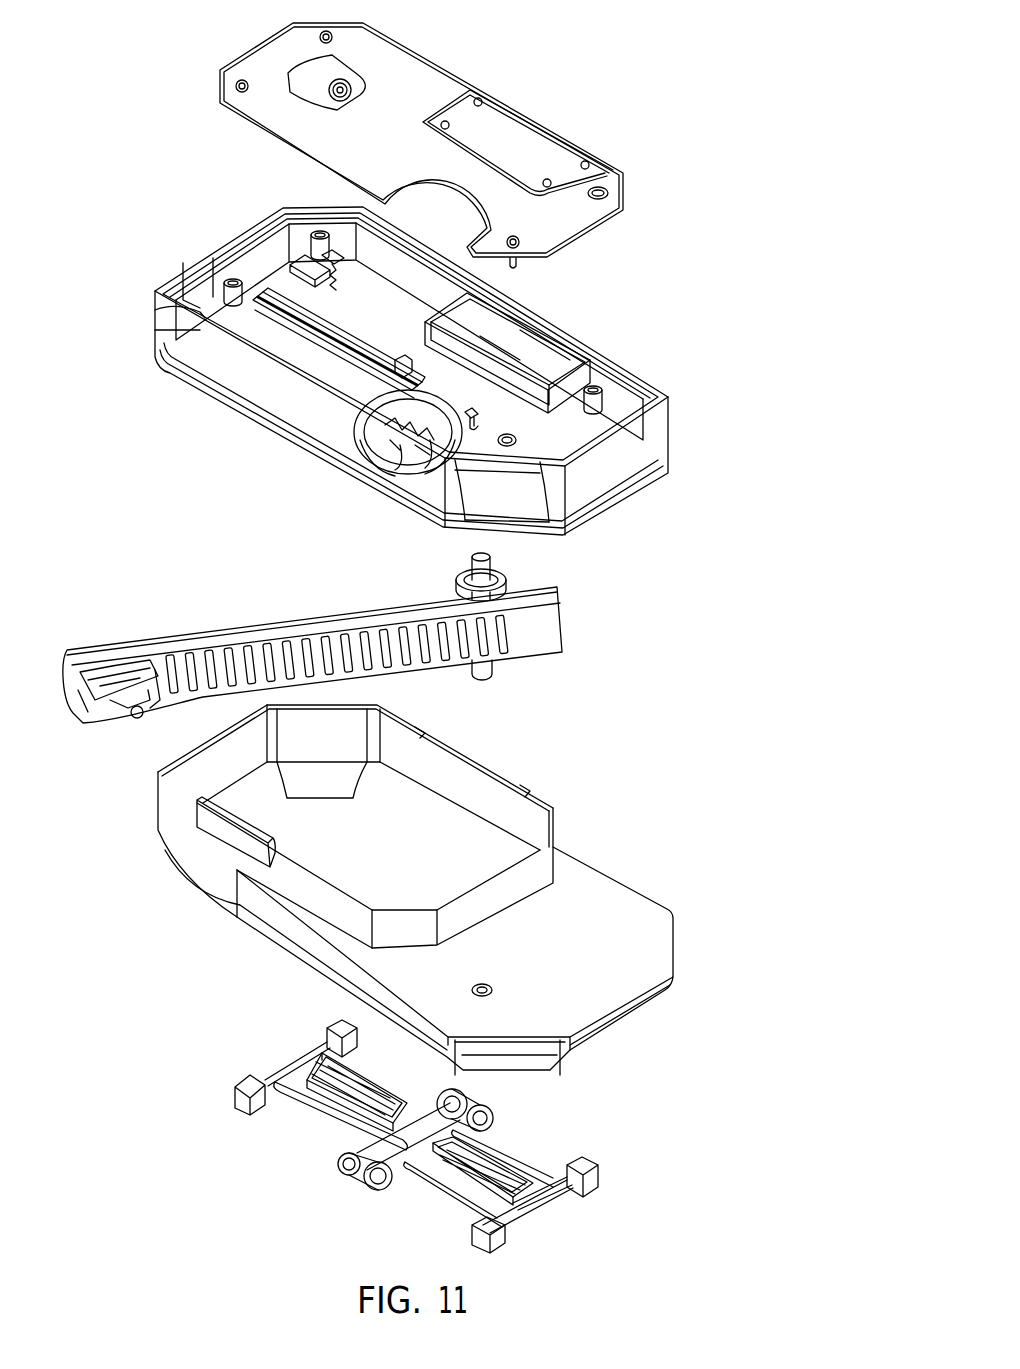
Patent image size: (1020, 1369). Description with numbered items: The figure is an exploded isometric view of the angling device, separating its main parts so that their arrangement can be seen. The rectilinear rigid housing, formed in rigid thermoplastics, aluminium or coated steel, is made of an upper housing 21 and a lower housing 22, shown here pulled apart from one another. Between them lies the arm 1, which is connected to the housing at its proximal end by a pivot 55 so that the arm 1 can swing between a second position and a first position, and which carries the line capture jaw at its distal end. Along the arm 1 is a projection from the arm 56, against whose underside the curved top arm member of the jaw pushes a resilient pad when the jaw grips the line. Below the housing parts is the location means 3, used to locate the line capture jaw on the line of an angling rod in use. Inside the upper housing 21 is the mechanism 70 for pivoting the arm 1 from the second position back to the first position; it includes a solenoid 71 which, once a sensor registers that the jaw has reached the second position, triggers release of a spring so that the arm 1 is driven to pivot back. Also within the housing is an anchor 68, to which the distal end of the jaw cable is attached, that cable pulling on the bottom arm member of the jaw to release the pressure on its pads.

The arm 1 is at (410, 624).
The location means 3 is at (653, 1177).
The upper housing 21 is at (446, 342).
The lower housing 22 is at (706, 947).
The pivot 55 is at (468, 573).
The projection from the arm 56 is at (240, 657).
The anchor 68 is at (470, 417).
The mechanism 70 is at (268, 339).
The solenoid 71 is at (333, 263).